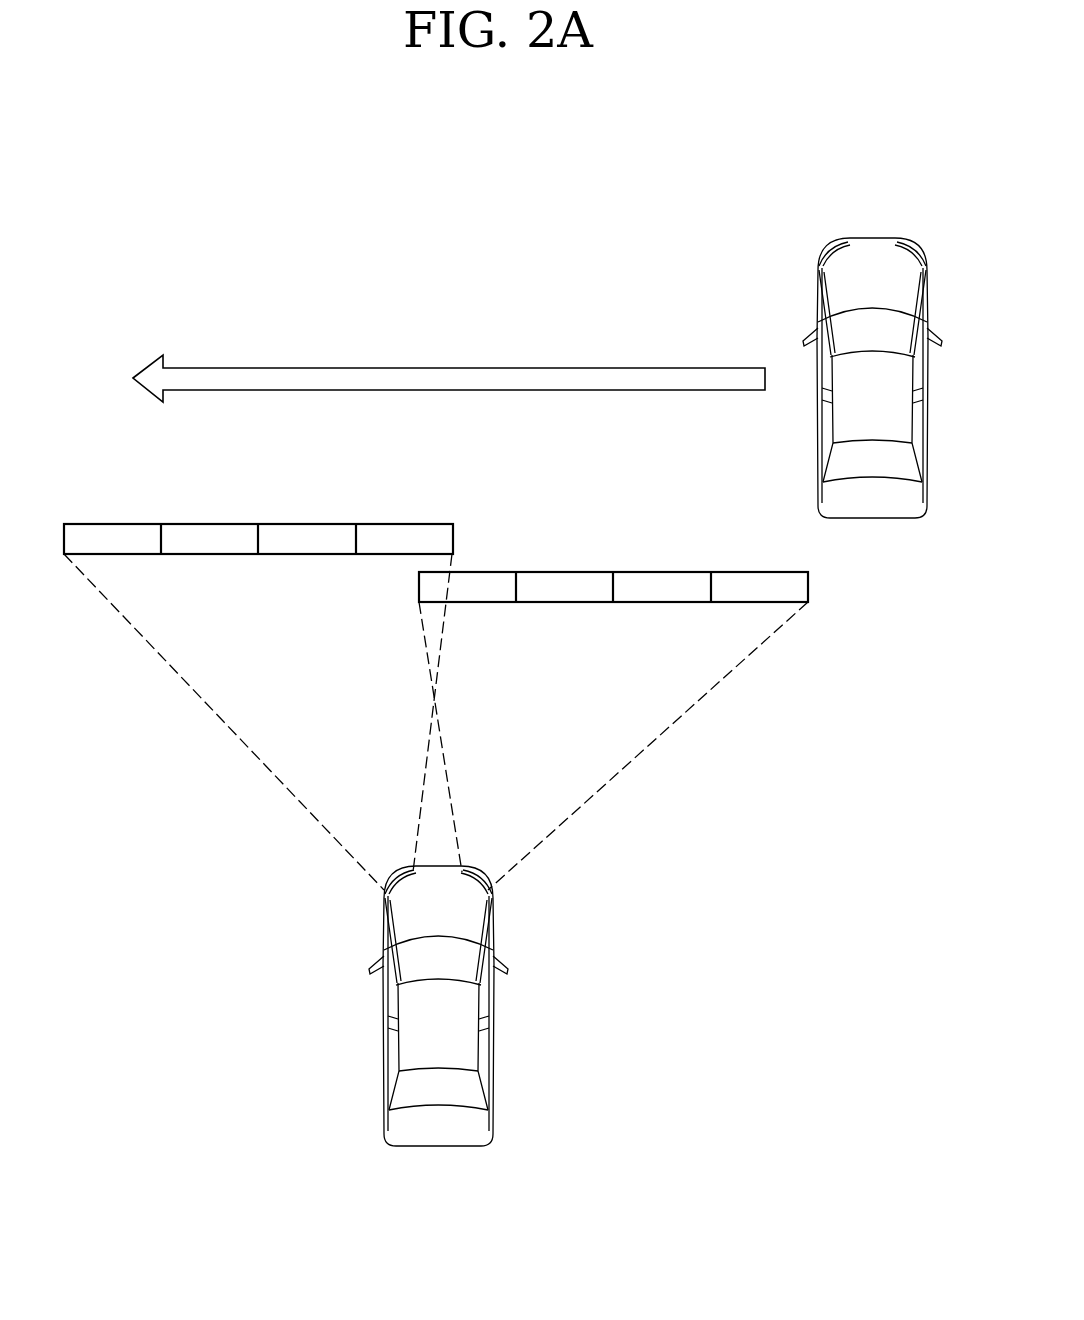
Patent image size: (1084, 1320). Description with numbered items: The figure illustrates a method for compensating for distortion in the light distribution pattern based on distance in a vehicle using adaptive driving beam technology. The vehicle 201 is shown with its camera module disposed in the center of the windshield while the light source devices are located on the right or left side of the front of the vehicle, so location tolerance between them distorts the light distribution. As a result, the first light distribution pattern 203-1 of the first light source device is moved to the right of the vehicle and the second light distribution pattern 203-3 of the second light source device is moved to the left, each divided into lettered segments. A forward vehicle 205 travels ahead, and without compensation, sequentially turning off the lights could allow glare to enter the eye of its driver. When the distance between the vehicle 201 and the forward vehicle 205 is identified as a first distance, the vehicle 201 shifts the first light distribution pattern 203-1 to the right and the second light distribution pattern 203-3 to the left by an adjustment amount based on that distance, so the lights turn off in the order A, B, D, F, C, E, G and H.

The vehicle 201 is at (452, 1133).
The first light distribution pattern 203-1 is at (140, 524).
The second light distribution pattern 203-3 is at (722, 572).
The forward vehicle 205 is at (870, 256).